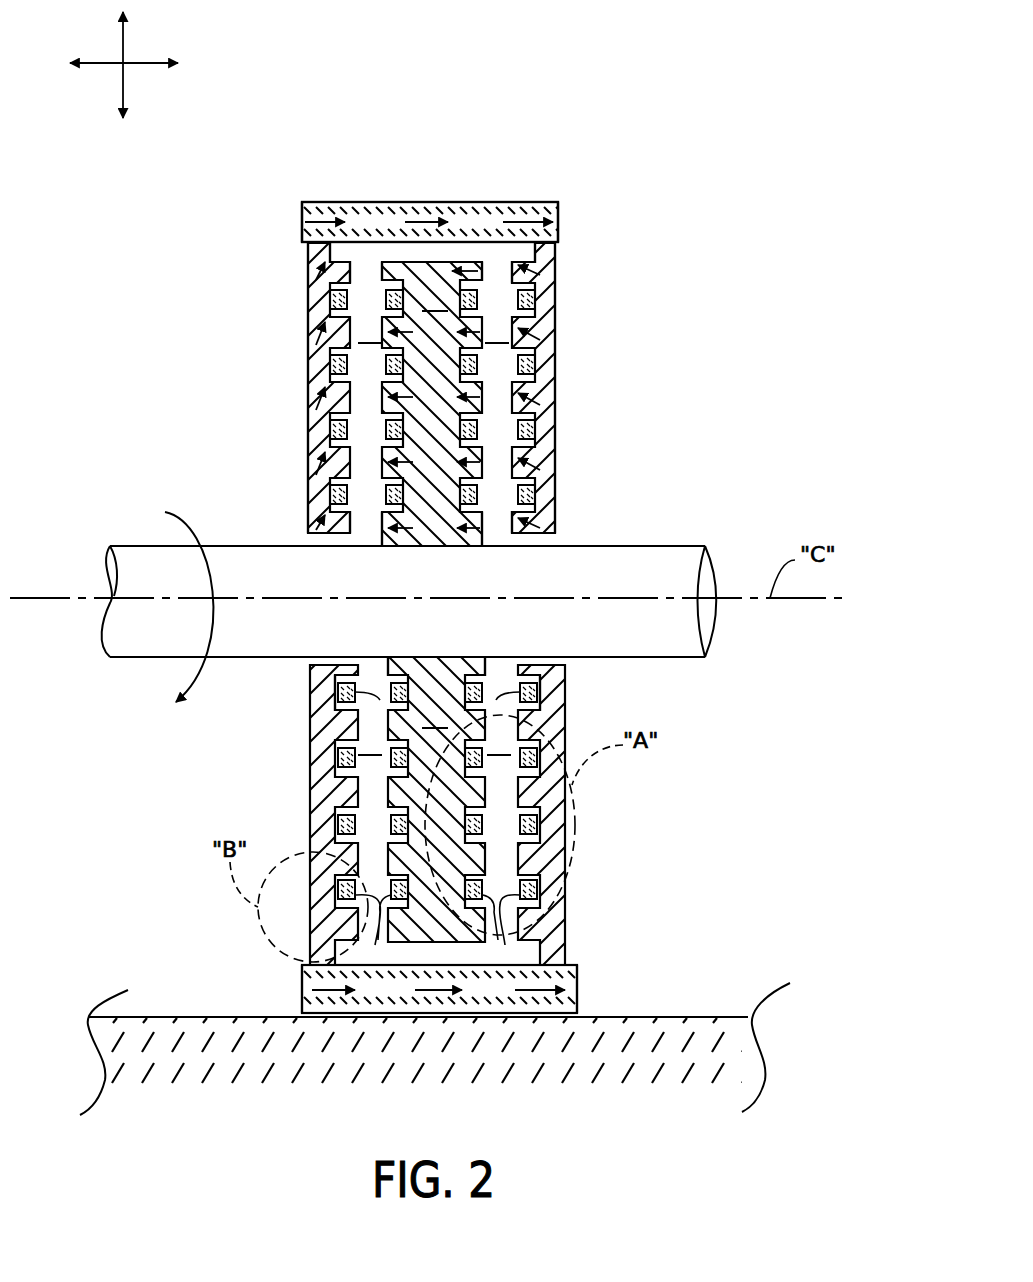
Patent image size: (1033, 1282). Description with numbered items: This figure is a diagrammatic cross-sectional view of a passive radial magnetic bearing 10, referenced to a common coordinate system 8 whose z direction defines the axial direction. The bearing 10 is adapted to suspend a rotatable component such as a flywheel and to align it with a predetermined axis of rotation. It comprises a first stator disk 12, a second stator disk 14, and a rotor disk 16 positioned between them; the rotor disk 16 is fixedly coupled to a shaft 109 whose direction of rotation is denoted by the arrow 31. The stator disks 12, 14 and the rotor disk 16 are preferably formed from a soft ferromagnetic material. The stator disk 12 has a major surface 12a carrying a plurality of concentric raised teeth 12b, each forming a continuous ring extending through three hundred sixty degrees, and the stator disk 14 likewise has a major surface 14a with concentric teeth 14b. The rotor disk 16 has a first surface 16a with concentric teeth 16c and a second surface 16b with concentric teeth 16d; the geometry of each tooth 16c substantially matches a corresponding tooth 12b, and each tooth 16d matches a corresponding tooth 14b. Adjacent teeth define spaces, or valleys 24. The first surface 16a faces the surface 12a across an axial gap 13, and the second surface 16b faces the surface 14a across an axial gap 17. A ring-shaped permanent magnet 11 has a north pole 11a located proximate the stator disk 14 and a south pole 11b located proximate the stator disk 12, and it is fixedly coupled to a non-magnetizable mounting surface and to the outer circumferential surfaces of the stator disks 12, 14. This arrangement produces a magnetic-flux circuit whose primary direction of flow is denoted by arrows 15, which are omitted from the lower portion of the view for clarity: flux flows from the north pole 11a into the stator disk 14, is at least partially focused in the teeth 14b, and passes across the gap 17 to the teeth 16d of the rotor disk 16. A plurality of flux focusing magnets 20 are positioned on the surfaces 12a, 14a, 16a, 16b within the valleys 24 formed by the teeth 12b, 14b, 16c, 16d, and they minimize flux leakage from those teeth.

The coordinate system 8 is at (132, 73).
The passive radial magnetic bearing 10 is at (580, 180).
The ring-shaped permanent magnet 11 is at (565, 217).
The north pole 11a is at (560, 231).
The south pole 11b is at (302, 218).
The first stator disk 12 is at (300, 315).
The major surface 12a is at (350, 247).
The teeth 12b is at (355, 520).
The axial gap 13 is at (372, 537).
The second stator disk 14 is at (568, 285).
The major surface 14a is at (514, 256).
The teeth 14b is at (510, 520).
The arrows 15 is at (418, 220).
The rotor disk 16 is at (392, 724).
The first surface 16a is at (373, 260).
The second surface 16b is at (487, 258).
The teeth 16c is at (390, 520).
The teeth 16d is at (490, 520).
The axial gap 17 is at (500, 537).
The flux focusing magnets 20 is at (391, 695).
The valleys 24 is at (438, 829).
The arrow 31 is at (218, 570).
The shaft 109 is at (642, 546).